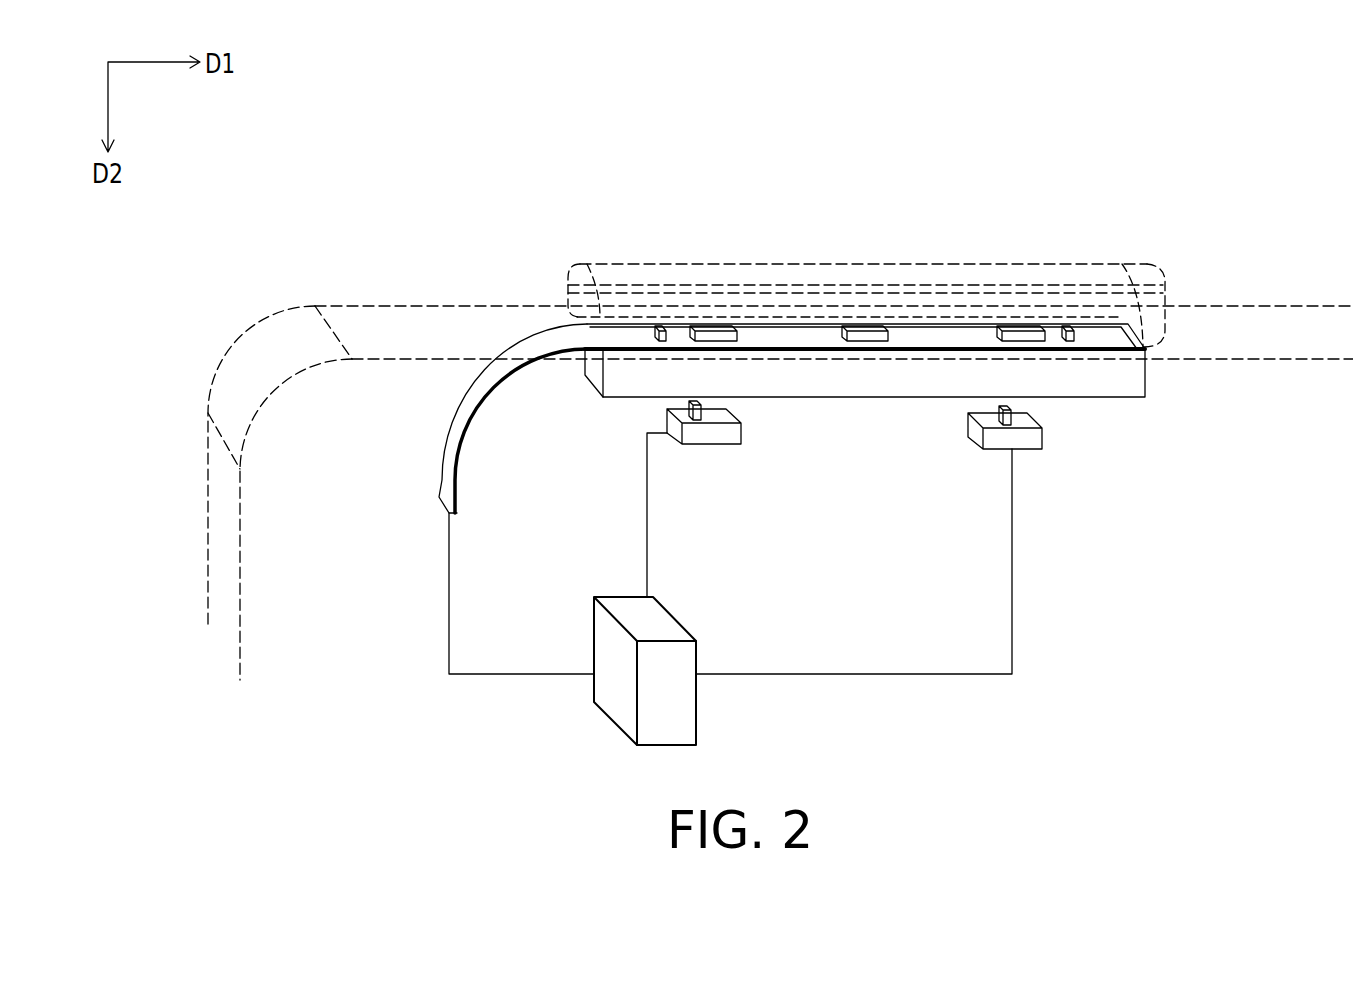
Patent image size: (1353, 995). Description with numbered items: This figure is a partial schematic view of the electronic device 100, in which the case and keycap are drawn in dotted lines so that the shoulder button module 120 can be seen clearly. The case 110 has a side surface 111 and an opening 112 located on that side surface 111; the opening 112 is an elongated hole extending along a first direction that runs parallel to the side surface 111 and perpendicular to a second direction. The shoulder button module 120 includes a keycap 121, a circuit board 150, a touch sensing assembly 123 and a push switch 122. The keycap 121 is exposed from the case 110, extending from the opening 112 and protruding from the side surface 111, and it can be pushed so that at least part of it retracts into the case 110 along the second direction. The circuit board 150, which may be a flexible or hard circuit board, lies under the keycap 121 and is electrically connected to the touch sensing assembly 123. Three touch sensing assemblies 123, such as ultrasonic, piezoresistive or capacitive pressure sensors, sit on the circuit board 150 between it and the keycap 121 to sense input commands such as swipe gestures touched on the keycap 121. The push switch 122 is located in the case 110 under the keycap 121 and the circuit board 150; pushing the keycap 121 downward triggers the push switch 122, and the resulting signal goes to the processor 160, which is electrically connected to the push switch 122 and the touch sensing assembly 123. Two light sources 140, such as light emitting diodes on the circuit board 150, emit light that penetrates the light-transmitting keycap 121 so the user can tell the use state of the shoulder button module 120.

The electronic device 100 is at (1282, 695).
The case 110 is at (240, 377).
The side surface 111 is at (1290, 333).
The opening 112 is at (1155, 322).
The shoulder button module 120 is at (865, 360).
The keycap 121 is at (650, 268).
The push switch 122 is at (995, 443).
The touch sensing assembly 123 is at (1013, 337).
The light source 140 is at (657, 333).
The circuit board 150 is at (480, 397).
The processor 160 is at (622, 693).